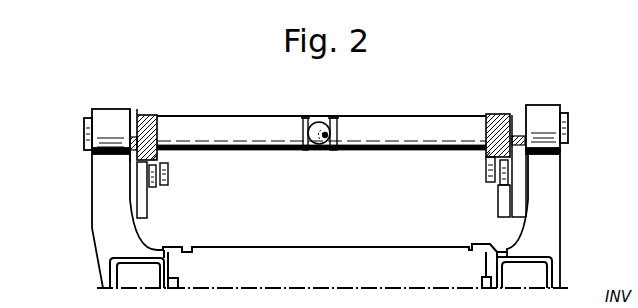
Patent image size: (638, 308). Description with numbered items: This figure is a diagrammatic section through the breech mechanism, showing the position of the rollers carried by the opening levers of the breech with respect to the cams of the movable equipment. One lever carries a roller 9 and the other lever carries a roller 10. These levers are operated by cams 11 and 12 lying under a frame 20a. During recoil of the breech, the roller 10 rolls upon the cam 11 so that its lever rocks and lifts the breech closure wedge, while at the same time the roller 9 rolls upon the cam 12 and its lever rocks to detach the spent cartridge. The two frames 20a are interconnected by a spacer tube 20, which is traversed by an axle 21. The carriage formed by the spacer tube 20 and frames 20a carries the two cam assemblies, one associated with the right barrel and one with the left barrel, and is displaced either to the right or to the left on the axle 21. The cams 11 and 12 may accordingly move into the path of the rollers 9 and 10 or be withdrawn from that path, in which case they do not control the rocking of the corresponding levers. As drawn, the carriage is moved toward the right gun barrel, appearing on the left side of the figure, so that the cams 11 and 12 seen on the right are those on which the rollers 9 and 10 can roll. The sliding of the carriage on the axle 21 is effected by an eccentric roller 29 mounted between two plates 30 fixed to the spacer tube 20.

The roller 9 is at (168, 170).
The roller 10 is at (152, 187).
The cam 11 is at (138, 167).
The cam 12 is at (155, 151).
The spacer tube 20 is at (273, 137).
The frame 20a is at (142, 115).
The axle 21 is at (520, 123).
The eccentric roller 29 is at (315, 142).
The plates 30 is at (303, 132).